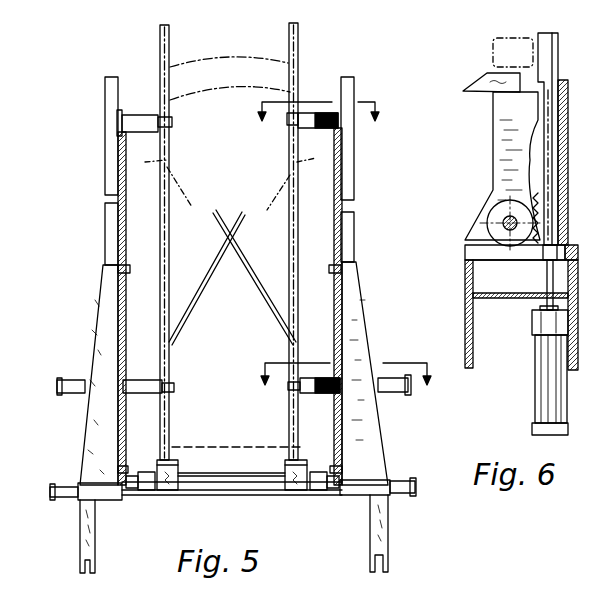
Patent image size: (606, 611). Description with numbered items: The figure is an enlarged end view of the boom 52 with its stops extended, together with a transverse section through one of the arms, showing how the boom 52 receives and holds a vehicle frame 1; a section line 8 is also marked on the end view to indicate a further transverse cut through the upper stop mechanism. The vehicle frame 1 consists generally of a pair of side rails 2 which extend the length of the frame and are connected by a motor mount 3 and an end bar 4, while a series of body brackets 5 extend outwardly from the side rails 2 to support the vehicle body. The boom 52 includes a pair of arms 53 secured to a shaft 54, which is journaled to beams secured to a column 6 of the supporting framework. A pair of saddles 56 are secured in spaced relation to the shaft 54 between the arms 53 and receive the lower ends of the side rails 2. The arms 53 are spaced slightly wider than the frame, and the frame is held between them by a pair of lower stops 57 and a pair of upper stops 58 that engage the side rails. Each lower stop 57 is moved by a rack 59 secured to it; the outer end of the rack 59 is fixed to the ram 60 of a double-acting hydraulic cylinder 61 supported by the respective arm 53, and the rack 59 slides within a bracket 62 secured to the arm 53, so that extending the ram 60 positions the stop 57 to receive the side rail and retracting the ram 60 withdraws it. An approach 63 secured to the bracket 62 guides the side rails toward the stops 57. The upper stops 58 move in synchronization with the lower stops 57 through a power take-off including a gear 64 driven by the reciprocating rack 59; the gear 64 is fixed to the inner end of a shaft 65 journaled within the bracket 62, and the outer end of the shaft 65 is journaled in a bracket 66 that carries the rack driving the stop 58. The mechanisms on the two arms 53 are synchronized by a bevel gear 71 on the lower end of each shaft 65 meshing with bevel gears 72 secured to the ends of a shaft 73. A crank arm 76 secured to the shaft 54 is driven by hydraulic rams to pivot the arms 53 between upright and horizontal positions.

In FIG. 5, the vehicle frame 1 is at (298, 47).
In FIG. 5, the side rails 2 is at (168, 255).
In FIG. 6, the side rails 2 is at (512, 38).
In FIG. 5, the motor mount 3 is at (238, 67).
In FIG. 5, the end bar 4 is at (227, 447).
In FIG. 5, the body brackets 5 is at (150, 163).
In FIG. 5, the column 6 is at (345, 370).
In FIG. 5, the section line 8- 8 is at (318, 107).
In FIG. 5, the boom 52 is at (367, 285).
In FIG. 5, the arms 53 is at (108, 250).
In FIG. 6, the arms 53 is at (512, 298).
In FIG. 5, the shaft 54 is at (405, 480).
In FIG. 5, the saddles 56 is at (157, 460).
In FIG. 5, the lower stops 57 is at (175, 385).
In FIG. 6, the lower stops 57 is at (557, 42).
In FIG. 5, the upper stops 58 is at (172, 124).
In FIG. 6, the rack 59 is at (550, 185).
In FIG. 6, the ram 60 is at (547, 275).
In FIG. 5, the double-acting hydraulic cylinder 61 is at (83, 380).
In FIG. 6, the double-acting hydraulic cylinder 61 is at (540, 368).
In FIG. 5, the bracket 62 is at (140, 380).
In FIG. 6, the bracket 62 is at (498, 138).
In FIG. 6, the approach 63 is at (490, 80).
In FIG. 6, the gear 64 is at (545, 228).
In FIG. 6, the shaft 65 is at (504, 221).
In FIG. 5, the bracket 66 is at (143, 128).
In FIG. 5, the bevel gear 71 is at (118, 470).
In FIG. 5, the bevel gears 72 is at (133, 493).
In FIG. 5, the shaft 73 is at (242, 473).
In FIG. 5, the crank arm 76 is at (96, 551).